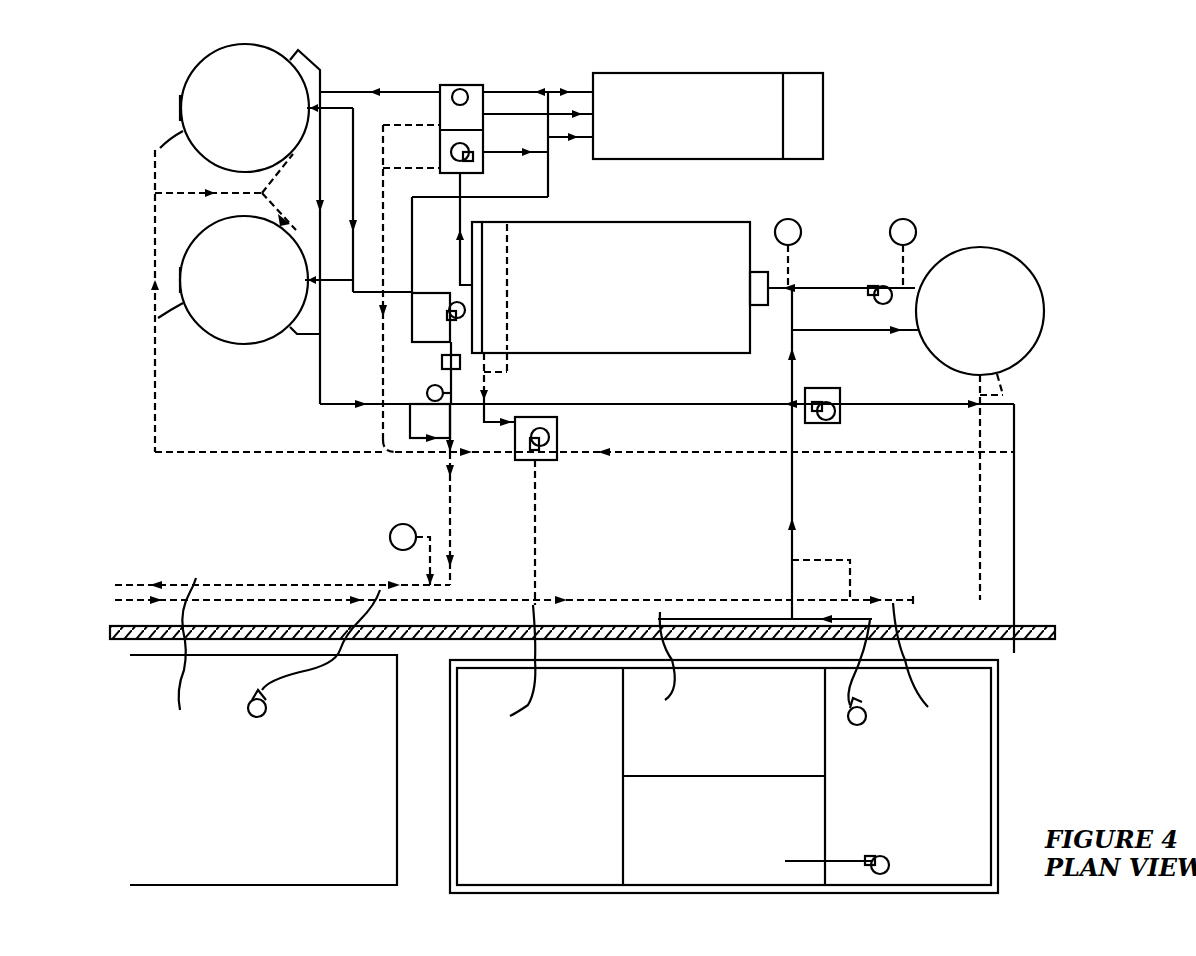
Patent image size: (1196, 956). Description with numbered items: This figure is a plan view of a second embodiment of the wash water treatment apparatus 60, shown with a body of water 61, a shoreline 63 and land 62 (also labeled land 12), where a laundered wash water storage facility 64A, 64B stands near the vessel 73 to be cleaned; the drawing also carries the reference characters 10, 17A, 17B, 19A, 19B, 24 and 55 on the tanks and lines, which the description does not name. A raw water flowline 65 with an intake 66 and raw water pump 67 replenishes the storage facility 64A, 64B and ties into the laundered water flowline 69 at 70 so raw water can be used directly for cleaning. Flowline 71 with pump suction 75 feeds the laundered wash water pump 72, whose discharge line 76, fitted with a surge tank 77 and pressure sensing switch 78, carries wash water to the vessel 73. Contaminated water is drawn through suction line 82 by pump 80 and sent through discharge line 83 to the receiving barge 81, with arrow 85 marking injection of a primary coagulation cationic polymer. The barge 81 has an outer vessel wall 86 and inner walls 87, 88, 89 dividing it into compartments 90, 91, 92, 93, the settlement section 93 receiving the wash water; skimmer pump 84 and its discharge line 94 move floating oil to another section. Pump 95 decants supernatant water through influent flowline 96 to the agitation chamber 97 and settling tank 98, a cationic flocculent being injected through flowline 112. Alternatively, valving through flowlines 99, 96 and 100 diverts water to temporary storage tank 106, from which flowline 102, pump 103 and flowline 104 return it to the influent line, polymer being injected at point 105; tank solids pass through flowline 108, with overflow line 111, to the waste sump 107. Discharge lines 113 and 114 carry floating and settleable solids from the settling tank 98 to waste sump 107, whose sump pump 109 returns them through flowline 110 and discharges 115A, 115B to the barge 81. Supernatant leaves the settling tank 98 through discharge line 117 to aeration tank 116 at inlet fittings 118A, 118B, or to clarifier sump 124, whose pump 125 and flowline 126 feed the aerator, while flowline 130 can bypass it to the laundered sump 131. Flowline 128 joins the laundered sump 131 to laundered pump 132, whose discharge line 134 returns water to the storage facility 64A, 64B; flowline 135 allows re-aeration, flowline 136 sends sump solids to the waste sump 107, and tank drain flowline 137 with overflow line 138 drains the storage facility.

The system 10 is at (115, 162).
The land 12 is at (148, 501).
The tank outlet 17A is at (292, 340).
The tank outlet 17B is at (303, 55).
The tank inlet 19A is at (315, 272).
The tank inlet 19B is at (315, 101).
The building 24 is at (263, 770).
The conduit 55 is at (318, 192).
The apparatus 60 is at (1060, 420).
The body of water 61 is at (1034, 762).
The land 62 is at (1046, 496).
The shoreline 63 is at (110, 634).
The laundered wash water storage facility 64A is at (254, 328).
The laundered wash water storage facility 64B is at (258, 160).
The raw water flowline 65 is at (1012, 610).
The intake 66 is at (1014, 653).
The raw water pump 67 is at (828, 422).
The laundered water flowline 69 is at (452, 500).
The tie-in point 70 is at (448, 440).
The flowline 71 is at (353, 200).
The laundered wash water pump 72 is at (452, 320).
The vessel 73 is at (286, 844).
The pump suction 75 is at (448, 308).
The discharge line 76 is at (178, 682).
The surge tank 77 is at (426, 392).
The pressure sensing switch 78 is at (440, 362).
The pump 80 is at (270, 706).
The receiving barge 81 is at (998, 846).
The suction line 82 is at (256, 717).
The discharge line 83 is at (142, 600).
The skimmer pump 84 is at (888, 860).
The arrow 85 is at (436, 596).
The outer vessel wall 86 is at (996, 782).
The inner wall 87 is at (622, 762).
The inner wall 88 is at (740, 775).
The inner wall 89 is at (827, 752).
The compartment 90 is at (543, 777).
The compartment 91 is at (722, 712).
The compartment 92 is at (689, 865).
The settlement section 93 is at (924, 658).
The discharge line 94 is at (840, 858).
The pump 95 is at (866, 718).
The influent flowline 96 is at (796, 497).
The agitation chamber 97 is at (766, 230).
The settling tank 98 is at (598, 272).
The flowline 99 is at (850, 578).
The flowline 100 is at (855, 336).
The flowline 102 is at (906, 296).
The pump 103 is at (878, 284).
The flowline 104 is at (816, 296).
The injection point 105 is at (908, 262).
The temporary storage tank 106 is at (971, 350).
The waste sump 107 is at (558, 422).
The tank drain flowline 108 is at (868, 452).
The sump pump 109 is at (530, 440).
The flowline 110 is at (538, 506).
The overflow line 111 is at (1004, 394).
The flowline 112 is at (792, 264).
The discharge line 113 is at (508, 372).
The discharge line 114 is at (471, 385).
The discharge 115A is at (511, 669).
The discharge 115B is at (666, 666).
The aeration tank 116 is at (764, 128).
The discharge line 117 is at (458, 252).
The inlet fitting 118A is at (590, 144).
The inlet fitting 118B is at (592, 92).
The clarifier sump 124 is at (478, 175).
The pump 125 is at (445, 158).
The flowline 126 is at (480, 160).
The flowline 128 is at (590, 113).
The flowline 130 is at (500, 92).
The laundered sump 131 is at (470, 85).
The laundered pump 132 is at (458, 88).
The discharge line 134 is at (374, 92).
The flowline 135 is at (442, 198).
The flowline 136 is at (383, 180).
The tank drain flowline 137 is at (152, 212).
The overflow line 138 is at (222, 192).